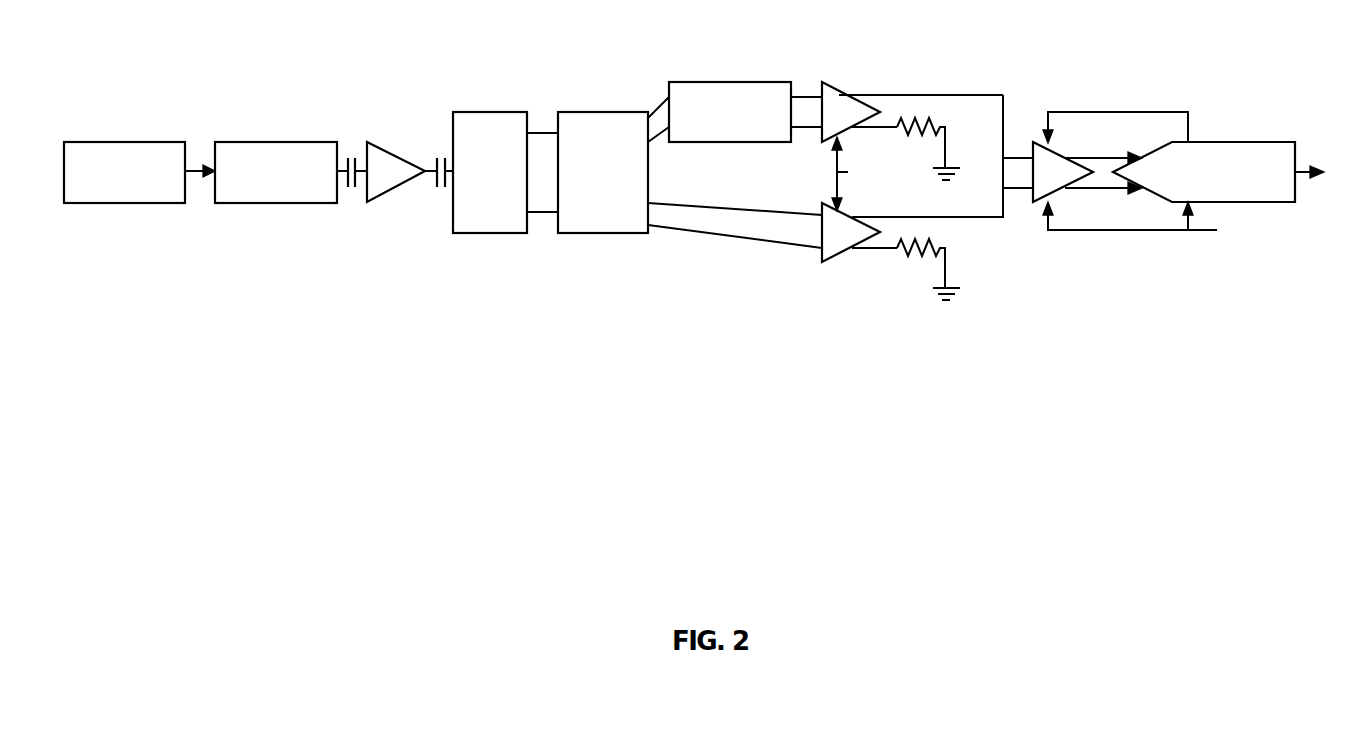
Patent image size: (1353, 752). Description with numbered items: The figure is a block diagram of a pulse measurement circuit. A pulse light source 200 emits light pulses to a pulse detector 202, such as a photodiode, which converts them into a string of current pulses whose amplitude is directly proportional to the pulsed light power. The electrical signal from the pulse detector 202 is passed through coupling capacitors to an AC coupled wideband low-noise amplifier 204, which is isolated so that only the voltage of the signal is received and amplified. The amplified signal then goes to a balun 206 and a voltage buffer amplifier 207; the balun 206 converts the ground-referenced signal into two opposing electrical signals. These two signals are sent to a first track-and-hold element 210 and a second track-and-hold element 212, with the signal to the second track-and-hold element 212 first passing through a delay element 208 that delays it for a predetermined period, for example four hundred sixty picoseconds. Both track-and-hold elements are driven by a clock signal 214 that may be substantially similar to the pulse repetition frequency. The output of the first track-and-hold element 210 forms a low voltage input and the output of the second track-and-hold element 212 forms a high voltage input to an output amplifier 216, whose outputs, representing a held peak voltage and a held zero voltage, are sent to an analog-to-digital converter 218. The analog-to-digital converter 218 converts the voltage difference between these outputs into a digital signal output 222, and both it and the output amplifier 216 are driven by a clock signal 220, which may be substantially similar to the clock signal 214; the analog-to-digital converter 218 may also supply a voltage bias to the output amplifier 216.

The pulse light source 200 is at (110, 142).
The pulse detector 202 is at (268, 142).
The AC coupled wideband low-noise amplifier 204 is at (378, 150).
The balun 206 is at (465, 233).
The voltage buffer amplifier 207 is at (582, 233).
The delay element 208 is at (697, 133).
The first track-and-hold element 210 is at (830, 258).
The second track-and-hold element 212 is at (838, 92).
The clock signal 214 is at (848, 172).
The output amplifier 216 is at (1057, 186).
The analog-to-digital converter 218 is at (1260, 203).
The clock signal 220 is at (1206, 232).
The digital signal output 222 is at (1298, 163).